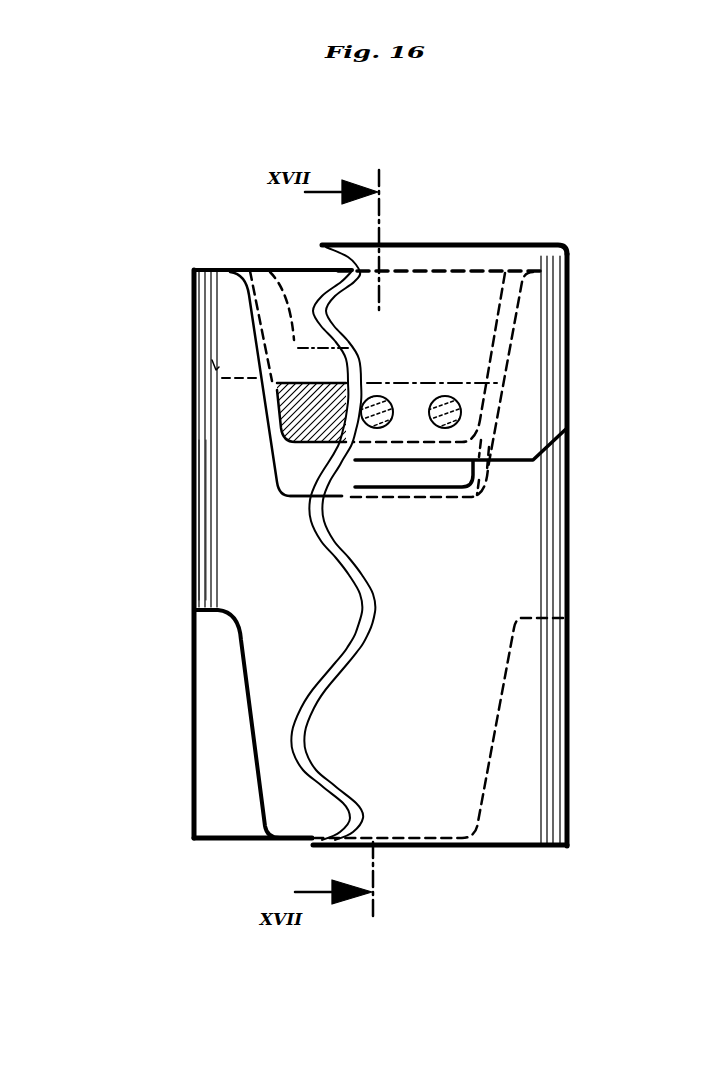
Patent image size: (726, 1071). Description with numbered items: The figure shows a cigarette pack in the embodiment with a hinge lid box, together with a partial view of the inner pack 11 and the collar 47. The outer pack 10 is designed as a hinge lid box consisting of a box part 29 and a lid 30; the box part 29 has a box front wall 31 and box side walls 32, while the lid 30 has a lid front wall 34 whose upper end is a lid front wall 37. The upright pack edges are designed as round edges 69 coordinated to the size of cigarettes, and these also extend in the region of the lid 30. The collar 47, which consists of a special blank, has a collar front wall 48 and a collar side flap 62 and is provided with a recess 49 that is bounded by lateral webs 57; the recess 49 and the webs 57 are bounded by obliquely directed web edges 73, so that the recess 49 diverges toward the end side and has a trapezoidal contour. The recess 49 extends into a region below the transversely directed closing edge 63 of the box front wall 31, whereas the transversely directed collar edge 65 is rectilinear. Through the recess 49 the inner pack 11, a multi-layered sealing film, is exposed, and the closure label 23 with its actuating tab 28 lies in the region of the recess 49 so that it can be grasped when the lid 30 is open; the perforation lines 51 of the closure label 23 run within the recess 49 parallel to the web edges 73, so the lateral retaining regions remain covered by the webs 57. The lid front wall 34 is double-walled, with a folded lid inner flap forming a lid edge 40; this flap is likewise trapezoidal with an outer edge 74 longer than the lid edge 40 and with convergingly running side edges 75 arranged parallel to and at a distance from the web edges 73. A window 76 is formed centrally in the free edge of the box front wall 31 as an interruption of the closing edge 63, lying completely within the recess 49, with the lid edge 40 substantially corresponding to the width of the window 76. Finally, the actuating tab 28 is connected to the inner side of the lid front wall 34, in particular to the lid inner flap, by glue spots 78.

The outer pack 10 is at (587, 566).
The inner pack 11 is at (148, 663).
The closure label 23 is at (257, 258).
The actuating tab 28 is at (280, 424).
The box part 29 is at (583, 646).
The lid 30 is at (578, 230).
The box front wall 31 is at (416, 703).
The box side walls 32 is at (567, 316).
The lid front wall 34 is at (470, 300).
The lid front wall 37 is at (452, 245).
The lid edge 40 is at (470, 452).
The collar 47 is at (243, 738).
The collar front wall 48 is at (288, 770).
The recess 49 is at (293, 468).
The perforation lines 51 is at (191, 288).
The webs 57 is at (230, 338).
The collar side flap 62 is at (194, 320).
The closing edge 63 is at (513, 463).
The collar edge 65 is at (293, 498).
The round edges 69 is at (203, 588).
The web edges 73 is at (257, 408).
The outer edge 74 is at (419, 270).
The side edges 75 is at (513, 340).
The window 76 is at (413, 465).
The glue spots 78 is at (380, 408).